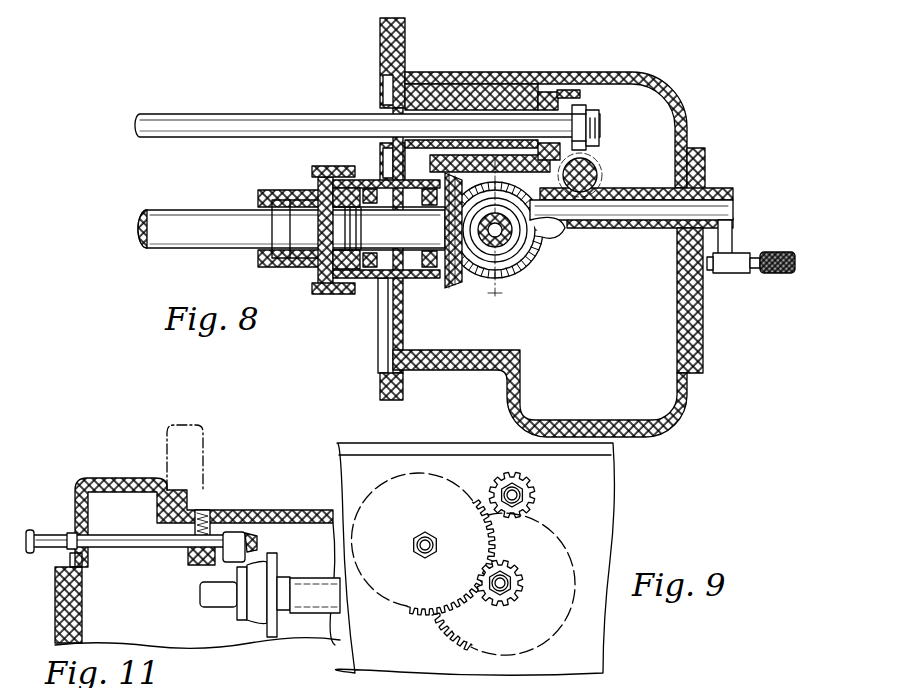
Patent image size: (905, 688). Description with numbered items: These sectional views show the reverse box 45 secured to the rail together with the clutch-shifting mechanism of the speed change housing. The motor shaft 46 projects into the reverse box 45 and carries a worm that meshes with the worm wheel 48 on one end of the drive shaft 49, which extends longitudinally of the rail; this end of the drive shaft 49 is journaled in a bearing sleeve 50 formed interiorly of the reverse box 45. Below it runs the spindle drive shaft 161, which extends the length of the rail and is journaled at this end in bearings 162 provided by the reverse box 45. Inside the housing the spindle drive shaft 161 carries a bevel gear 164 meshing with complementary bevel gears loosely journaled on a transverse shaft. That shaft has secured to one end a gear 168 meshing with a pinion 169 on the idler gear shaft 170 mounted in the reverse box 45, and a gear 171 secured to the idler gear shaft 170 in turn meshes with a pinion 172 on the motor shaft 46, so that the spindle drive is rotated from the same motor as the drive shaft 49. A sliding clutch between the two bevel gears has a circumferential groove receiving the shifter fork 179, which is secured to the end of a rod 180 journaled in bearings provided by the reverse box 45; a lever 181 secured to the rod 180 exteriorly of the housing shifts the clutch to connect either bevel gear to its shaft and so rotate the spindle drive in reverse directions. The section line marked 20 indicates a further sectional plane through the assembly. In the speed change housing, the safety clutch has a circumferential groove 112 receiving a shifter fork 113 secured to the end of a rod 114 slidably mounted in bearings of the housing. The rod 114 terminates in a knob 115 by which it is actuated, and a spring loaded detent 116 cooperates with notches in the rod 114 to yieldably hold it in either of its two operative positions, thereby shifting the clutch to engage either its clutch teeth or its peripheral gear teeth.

In FIG. 8, the reverse box 45 is at (689, 112).
In FIG. 8, the worm wheel 48 is at (595, 108).
In FIG. 8, the drive shaft 49 is at (346, 124).
In FIG. 8, the bearing sleeve 50 is at (422, 173).
In FIG. 8, the spindle drive shaft 161 is at (188, 219).
In FIG. 8, the bearings 162 is at (368, 282).
In FIG. 8, the bevel gear 164 is at (452, 290).
In FIG. 8, the section line 20 is at (486, 295).
In FIG. 8, the shifter fork 179 is at (550, 232).
In FIG. 8, the rod 180 is at (647, 212).
In FIG. 8, the lever 181 is at (733, 233).
In FIG. 11, the circumferential groove 112 is at (240, 623).
In FIG. 11, the shifter fork 113 is at (253, 557).
In FIG. 11, the rod 114 is at (173, 543).
In FIG. 11, the knob 115 is at (50, 508).
In FIG. 11, the spring loaded detent 116 is at (215, 518).
In FIG. 9, the gear 168 is at (432, 484).
In FIG. 9, the pinion 169 is at (503, 580).
In FIG. 9, the idler gear shaft 170 is at (510, 576).
In FIG. 9, the gear 171 is at (558, 634).
In FIG. 9, the pinion 172 is at (527, 483).
In FIG. 9, the motor shaft 46 is at (532, 499).